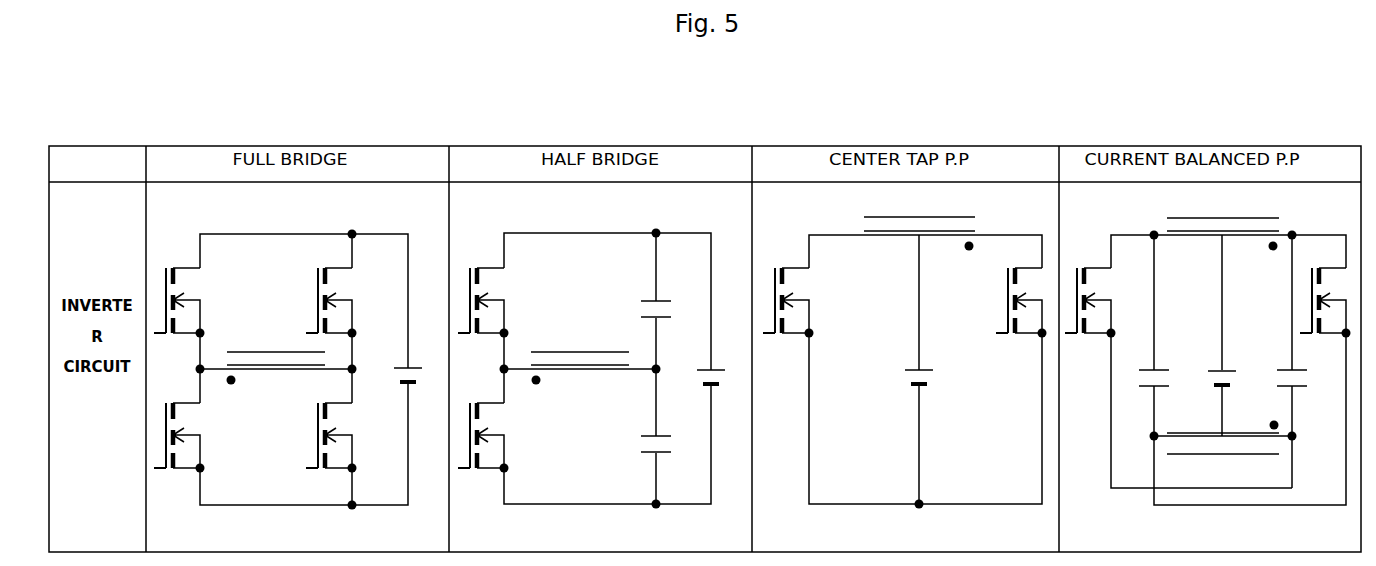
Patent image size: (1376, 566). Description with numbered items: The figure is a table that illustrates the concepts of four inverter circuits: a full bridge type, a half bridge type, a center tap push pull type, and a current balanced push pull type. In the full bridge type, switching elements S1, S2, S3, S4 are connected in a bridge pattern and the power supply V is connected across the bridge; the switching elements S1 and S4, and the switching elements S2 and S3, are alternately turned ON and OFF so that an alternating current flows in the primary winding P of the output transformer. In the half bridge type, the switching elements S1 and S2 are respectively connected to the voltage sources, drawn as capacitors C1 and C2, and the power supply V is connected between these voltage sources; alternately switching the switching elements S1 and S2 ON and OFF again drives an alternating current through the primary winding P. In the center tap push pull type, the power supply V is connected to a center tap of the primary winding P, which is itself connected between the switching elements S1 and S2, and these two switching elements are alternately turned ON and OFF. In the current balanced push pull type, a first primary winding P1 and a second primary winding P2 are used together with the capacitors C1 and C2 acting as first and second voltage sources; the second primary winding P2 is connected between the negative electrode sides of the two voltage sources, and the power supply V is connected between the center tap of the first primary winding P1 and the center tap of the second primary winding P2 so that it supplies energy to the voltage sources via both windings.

The switching element S1 is at (647, 303).
The switching element S2 is at (752, 370).
The switching element S3 is at (344, 303).
The switching element S4 is at (344, 438).
The primary winding P is at (601, 288).
The first primary winding P1 is at (1223, 221).
The second primary winding P2 is at (1223, 453).
The power supply V is at (826, 373).
The capacitor C1 is at (989, 340).
The capacitor C2 is at (920, 406).